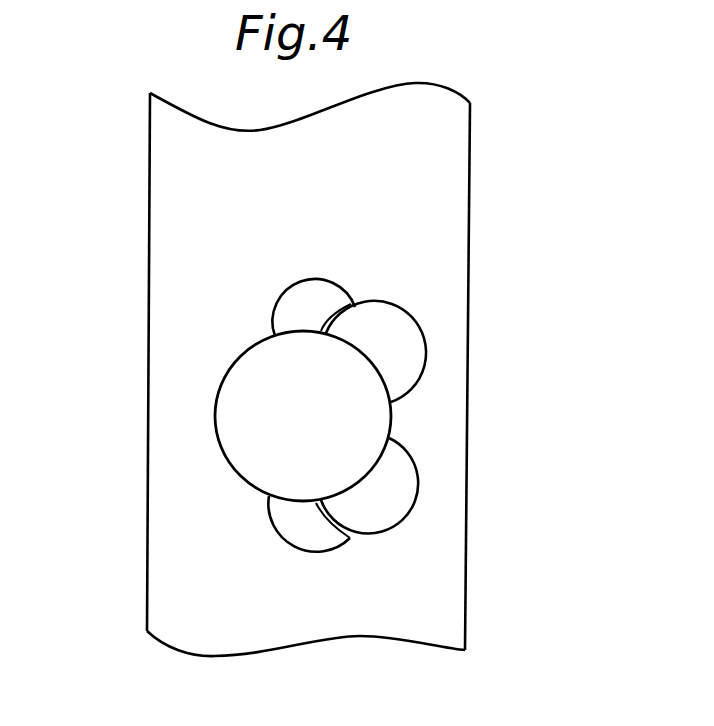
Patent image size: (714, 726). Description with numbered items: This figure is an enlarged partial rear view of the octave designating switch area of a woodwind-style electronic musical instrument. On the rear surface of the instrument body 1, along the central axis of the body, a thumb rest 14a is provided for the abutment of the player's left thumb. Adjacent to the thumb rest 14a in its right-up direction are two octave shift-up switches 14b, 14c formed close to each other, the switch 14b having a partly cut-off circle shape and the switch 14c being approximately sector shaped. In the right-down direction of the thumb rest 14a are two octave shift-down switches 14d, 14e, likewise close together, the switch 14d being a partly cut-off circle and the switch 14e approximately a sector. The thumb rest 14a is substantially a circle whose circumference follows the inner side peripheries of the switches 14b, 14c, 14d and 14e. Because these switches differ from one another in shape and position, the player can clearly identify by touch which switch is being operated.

The instrument body 1 is at (455, 138).
The thumb rest 14a is at (243, 413).
The octave shift-up switch 14b is at (403, 363).
The octave shift-up switch 14c is at (318, 287).
The octave shift-down switch 14d is at (403, 480).
The octave shift-down switch 14e is at (322, 537).